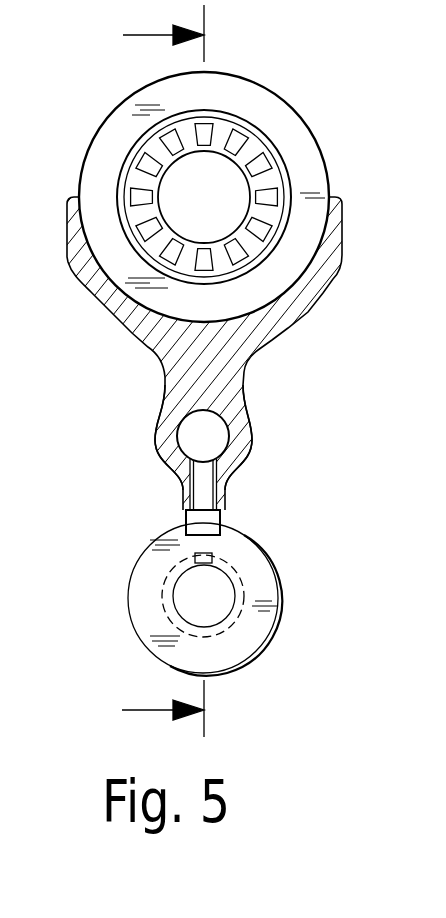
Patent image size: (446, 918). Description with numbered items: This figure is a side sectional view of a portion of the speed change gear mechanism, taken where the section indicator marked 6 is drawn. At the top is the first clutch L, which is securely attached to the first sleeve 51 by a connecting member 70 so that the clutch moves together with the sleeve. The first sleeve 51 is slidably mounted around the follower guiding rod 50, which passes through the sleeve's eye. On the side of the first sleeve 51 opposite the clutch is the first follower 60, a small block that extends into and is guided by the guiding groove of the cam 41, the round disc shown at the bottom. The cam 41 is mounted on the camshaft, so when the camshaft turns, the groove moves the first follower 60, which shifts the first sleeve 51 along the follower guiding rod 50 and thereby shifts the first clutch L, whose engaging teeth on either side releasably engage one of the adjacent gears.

The first clutch L is at (256, 142).
The connecting member 70 is at (313, 283).
The first sleeve 51 is at (247, 413).
The follower guiding rod 50 is at (213, 450).
The first follower 60 is at (220, 527).
The cam 41 is at (258, 570).
The section line 6- 6 is at (149, 371).